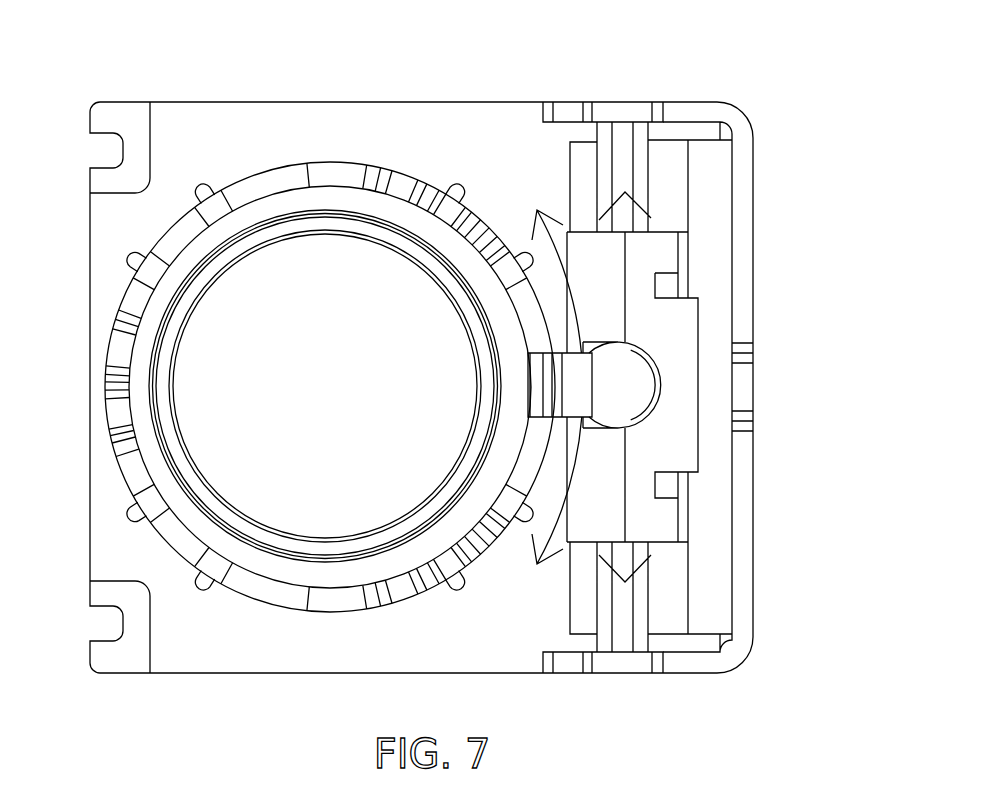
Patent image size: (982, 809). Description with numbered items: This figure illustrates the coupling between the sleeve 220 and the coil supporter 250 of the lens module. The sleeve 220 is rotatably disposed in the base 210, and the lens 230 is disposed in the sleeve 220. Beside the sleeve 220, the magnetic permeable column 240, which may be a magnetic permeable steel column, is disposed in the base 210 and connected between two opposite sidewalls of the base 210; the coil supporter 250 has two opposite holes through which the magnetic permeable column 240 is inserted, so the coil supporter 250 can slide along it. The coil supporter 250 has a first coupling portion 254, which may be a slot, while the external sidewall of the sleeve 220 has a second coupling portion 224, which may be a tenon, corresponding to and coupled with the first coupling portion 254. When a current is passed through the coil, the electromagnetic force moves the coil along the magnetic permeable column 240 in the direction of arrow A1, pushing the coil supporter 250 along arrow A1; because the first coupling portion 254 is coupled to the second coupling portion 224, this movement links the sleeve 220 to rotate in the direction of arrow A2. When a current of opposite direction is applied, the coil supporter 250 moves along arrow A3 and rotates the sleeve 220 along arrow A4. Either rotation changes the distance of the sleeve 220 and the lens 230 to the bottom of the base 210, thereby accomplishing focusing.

The base 210 is at (693, 118).
The sleeve 220 is at (500, 465).
The second coupling portion 224 is at (610, 403).
The lens 230 is at (205, 372).
The magnetic permeable column 240 is at (642, 177).
The coil supporter 250 is at (678, 319).
The first coupling portion 254 is at (645, 364).
The arrow A1 is at (626, 258).
The arrow A2 is at (533, 238).
The arrow A3 is at (625, 522).
The arrow A4 is at (553, 533).